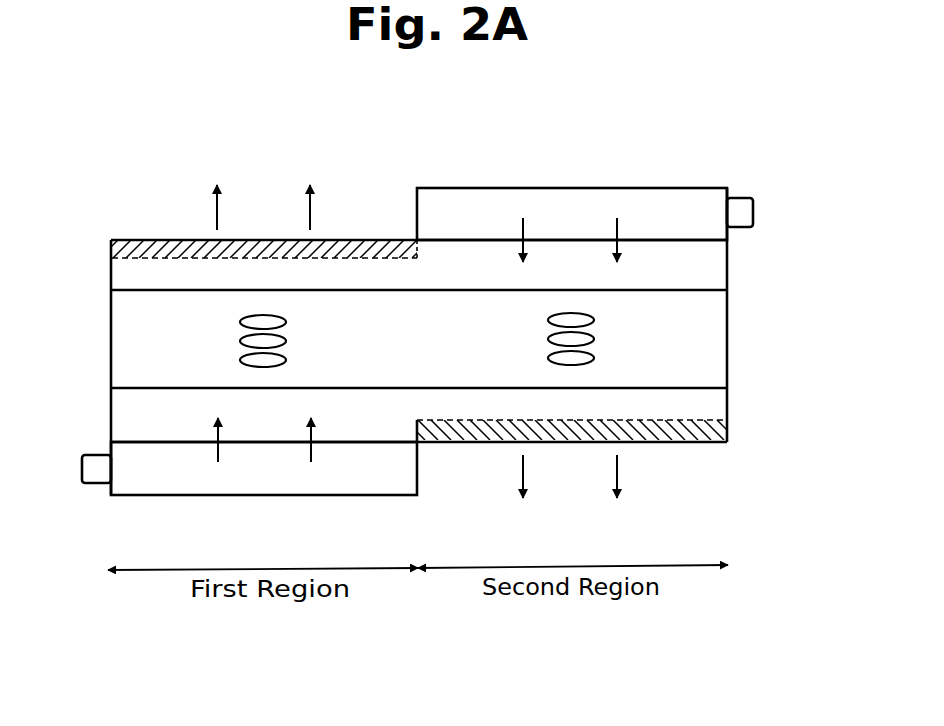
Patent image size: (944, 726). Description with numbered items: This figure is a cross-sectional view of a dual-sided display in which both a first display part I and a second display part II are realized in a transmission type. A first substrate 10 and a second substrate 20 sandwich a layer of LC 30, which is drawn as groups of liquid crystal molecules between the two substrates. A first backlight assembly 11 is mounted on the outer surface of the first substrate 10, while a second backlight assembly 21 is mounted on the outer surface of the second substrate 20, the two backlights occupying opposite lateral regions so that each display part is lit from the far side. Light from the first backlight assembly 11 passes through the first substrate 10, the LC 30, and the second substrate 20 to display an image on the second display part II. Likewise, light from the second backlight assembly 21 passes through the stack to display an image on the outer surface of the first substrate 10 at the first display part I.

The first substrate 10 is at (716, 263).
The first backlight assembly 11 is at (676, 200).
The second substrate 20 is at (716, 403).
The second backlight assembly 21 is at (366, 476).
The LC 30 is at (596, 339).
The first display part I is at (112, 245).
The second display part II is at (716, 428).